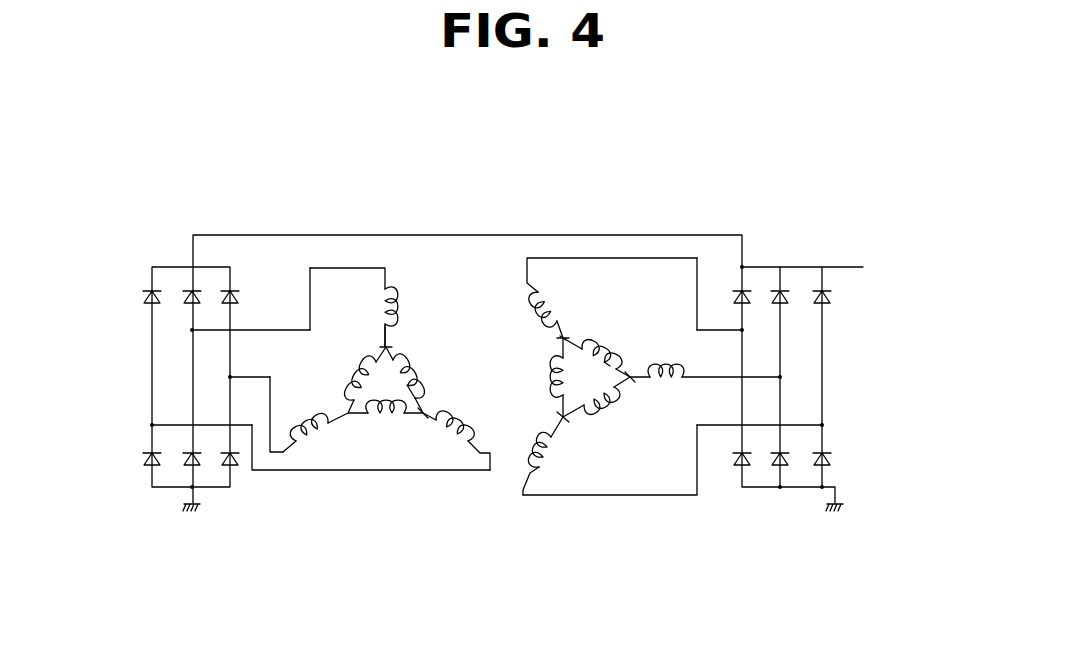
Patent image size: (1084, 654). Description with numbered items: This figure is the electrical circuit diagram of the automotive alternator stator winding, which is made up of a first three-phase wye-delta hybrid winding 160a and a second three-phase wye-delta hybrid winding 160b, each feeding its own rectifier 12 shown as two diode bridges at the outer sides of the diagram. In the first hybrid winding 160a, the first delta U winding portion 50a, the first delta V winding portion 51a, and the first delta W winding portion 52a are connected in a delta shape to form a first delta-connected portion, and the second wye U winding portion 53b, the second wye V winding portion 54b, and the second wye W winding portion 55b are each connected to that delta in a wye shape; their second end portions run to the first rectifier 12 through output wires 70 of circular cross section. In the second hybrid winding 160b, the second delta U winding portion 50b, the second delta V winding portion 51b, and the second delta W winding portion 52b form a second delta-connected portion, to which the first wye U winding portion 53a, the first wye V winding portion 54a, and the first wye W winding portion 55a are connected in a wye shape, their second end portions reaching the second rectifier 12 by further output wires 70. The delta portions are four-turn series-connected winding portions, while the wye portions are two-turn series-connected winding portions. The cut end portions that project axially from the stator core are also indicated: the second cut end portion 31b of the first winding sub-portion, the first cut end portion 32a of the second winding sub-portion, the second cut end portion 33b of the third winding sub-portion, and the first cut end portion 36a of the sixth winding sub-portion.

The rectifier 12 is at (140, 352).
The output wire 70 is at (310, 283).
The first three-phase wye-delta hybrid winding 160a is at (653, 258).
The second three-phase wye-delta hybrid winding 160b is at (268, 318).
The second cut end portion of the first winding sub-portion 31b is at (362, 377).
The first cut end portion of the second winding sub-portion 32a is at (390, 372).
The second cut end portion of the third winding sub-portion 33b is at (386, 348).
The first cut end portion of the sixth winding sub-portion 36a is at (423, 415).
The first delta U winding portion 50a is at (550, 372).
The second delta U winding portion 50b is at (412, 372).
The first delta V winding portion 51a is at (605, 343).
The second delta V winding portion 51b is at (383, 417).
The first delta W winding portion 52a is at (600, 408).
The second delta W winding portion 52b is at (383, 285).
The first wye U winding portion 53a is at (387, 337).
The second wye U winding portion 53b is at (563, 338).
The first wye V winding portion 54a is at (458, 443).
The second wye V winding portion 54b is at (665, 385).
The first wye W winding portion 55a is at (308, 445).
The second wye W winding portion 55b is at (548, 448).